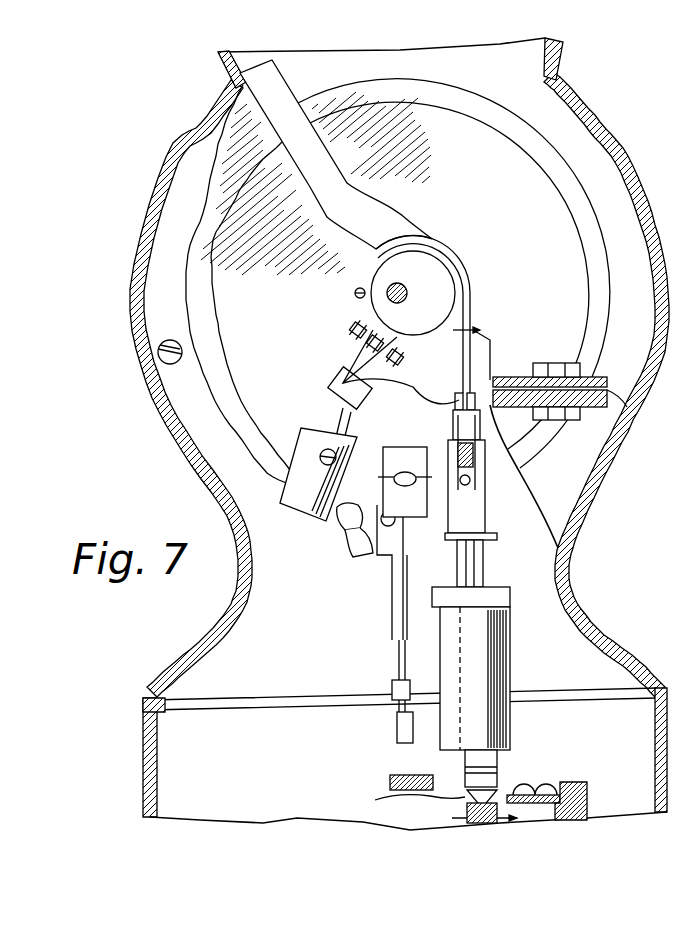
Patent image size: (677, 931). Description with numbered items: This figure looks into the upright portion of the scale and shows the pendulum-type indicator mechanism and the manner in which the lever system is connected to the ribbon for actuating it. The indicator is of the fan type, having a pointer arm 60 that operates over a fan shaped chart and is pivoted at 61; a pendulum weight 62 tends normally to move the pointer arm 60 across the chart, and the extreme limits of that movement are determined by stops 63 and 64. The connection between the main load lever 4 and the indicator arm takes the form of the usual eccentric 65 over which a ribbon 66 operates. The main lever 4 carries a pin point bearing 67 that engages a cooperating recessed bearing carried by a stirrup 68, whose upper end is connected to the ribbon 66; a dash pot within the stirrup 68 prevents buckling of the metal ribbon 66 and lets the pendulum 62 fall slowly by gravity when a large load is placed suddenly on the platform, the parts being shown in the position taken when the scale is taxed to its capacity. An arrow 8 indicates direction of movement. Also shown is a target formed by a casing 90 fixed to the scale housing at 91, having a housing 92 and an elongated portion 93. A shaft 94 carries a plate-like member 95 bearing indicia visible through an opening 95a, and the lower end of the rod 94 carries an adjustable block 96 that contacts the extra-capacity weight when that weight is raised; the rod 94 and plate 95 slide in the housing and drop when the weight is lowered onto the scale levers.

The main load lever 4 is at (585, 786).
The direction arrow 8 is at (476, 578).
The pointer arm 60 is at (282, 104).
The pivot 61 is at (388, 285).
The pendulum weight 62 is at (310, 520).
The stop 63 is at (170, 350).
The stop 64 is at (368, 553).
The eccentric 65 is at (425, 268).
The ribbon 66 is at (456, 330).
The pin point bearing 67 is at (495, 796).
The stirrup 68 is at (403, 789).
The casing 90 is at (403, 562).
The fixing point 91 is at (396, 523).
The housing 92 is at (426, 450).
The elongated portion 93 is at (390, 616).
The shaft 94 is at (398, 654).
The plate-like member 95 is at (373, 476).
The opening 95a is at (438, 478).
The adjustable block 96 is at (397, 732).